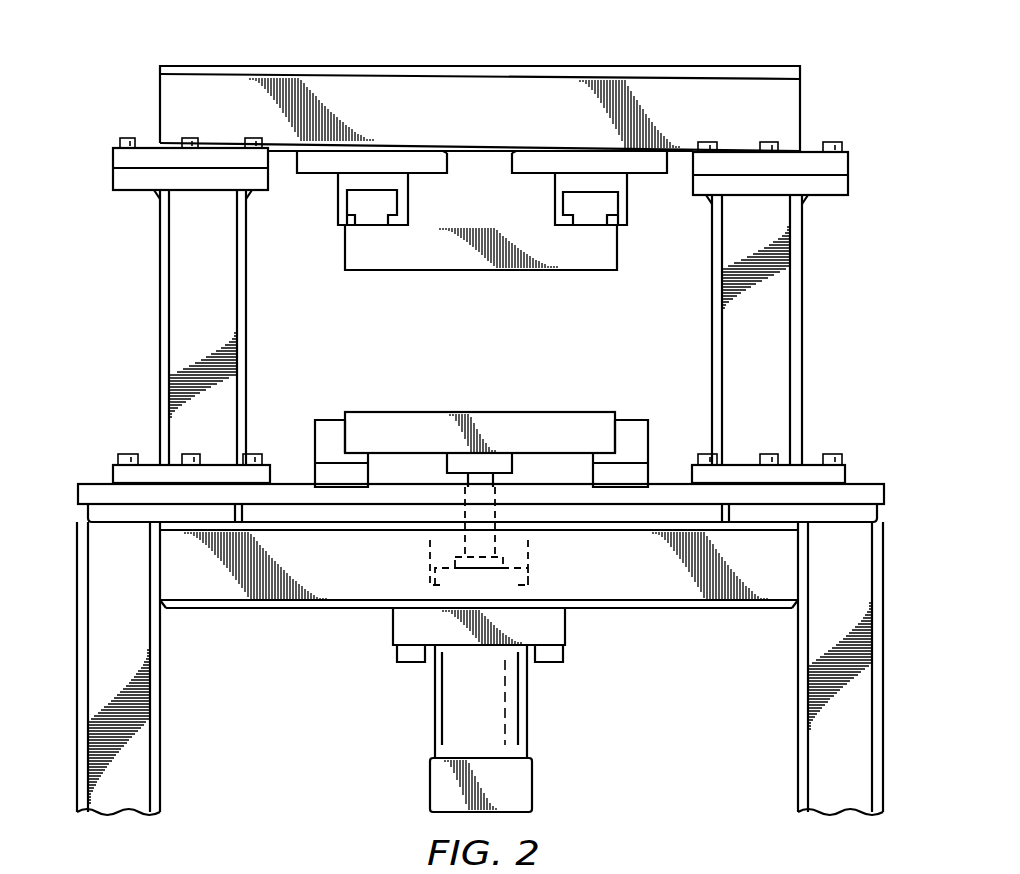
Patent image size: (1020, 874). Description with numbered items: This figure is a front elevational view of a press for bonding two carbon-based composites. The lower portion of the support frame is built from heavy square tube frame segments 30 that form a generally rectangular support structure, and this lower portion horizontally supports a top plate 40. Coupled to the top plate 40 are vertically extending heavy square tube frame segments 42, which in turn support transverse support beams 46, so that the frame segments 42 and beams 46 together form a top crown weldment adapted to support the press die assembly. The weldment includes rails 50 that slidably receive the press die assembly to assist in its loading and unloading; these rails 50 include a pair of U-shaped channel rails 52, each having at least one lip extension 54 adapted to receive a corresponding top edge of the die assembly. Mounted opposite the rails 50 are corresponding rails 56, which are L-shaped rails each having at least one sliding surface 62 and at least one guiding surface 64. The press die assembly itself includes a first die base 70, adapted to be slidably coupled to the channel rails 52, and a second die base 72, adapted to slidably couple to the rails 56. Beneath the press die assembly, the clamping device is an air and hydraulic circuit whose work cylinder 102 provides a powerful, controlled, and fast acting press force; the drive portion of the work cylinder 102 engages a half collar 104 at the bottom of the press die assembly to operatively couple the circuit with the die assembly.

The heavy square tube frame segments 30 is at (77, 659).
The top plate 40 is at (78, 488).
The vertically extending heavy square tube frame segments 42 is at (160, 322).
The transverse support beams 46 is at (486, 66).
The rails 50 is at (311, 173).
The U-shaped channel rails 52 is at (403, 207).
The lip extension 54 is at (343, 218).
The rails 56 is at (328, 420).
The sliding surface 62 is at (364, 440).
The guiding surface 64 is at (363, 428).
The first die base 70 is at (422, 270).
The second die base 72 is at (508, 412).
The work cylinder 102 is at (435, 700).
The half collar 104 is at (515, 463).